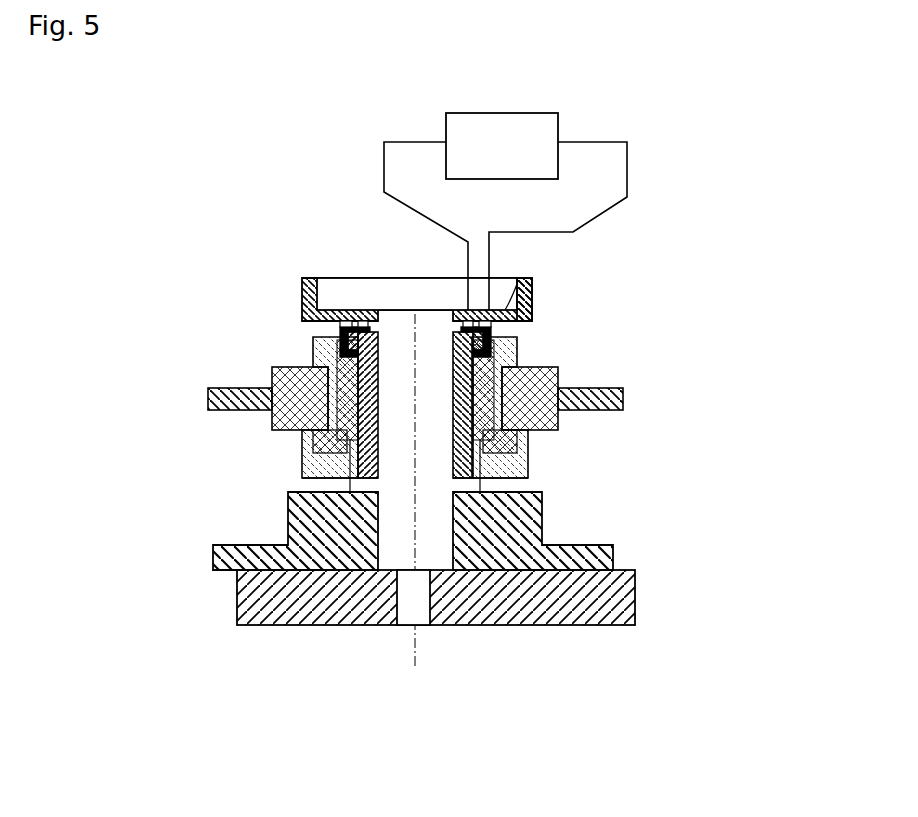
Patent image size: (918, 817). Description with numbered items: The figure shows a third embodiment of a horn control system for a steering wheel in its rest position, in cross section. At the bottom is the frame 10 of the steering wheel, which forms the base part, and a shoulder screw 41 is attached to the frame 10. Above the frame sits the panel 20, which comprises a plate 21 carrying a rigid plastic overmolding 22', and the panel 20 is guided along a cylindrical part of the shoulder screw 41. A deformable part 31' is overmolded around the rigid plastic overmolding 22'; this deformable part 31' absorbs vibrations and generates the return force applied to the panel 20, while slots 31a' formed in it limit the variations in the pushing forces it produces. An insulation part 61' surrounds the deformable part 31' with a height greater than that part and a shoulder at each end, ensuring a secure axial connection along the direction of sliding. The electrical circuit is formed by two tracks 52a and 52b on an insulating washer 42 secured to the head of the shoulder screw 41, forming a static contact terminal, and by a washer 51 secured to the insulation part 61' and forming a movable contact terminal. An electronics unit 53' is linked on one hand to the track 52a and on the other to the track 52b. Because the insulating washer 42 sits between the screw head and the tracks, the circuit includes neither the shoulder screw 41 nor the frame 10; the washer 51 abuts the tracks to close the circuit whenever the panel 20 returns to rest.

The frame 10 is at (622, 623).
The panel 20 is at (499, 378).
The plate 21 is at (457, 390).
The rigid plastic overmolding 22' is at (507, 388).
The deformable part 31' is at (331, 402).
The slots 31a' is at (335, 491).
The shoulder screw 41 is at (425, 607).
The insulating washer 42 is at (303, 288).
The washer 51 is at (517, 290).
The track 52a is at (365, 320).
The track 52b is at (345, 320).
The electronics unit 53' is at (505, 211).
The insulation part 61' is at (497, 461).